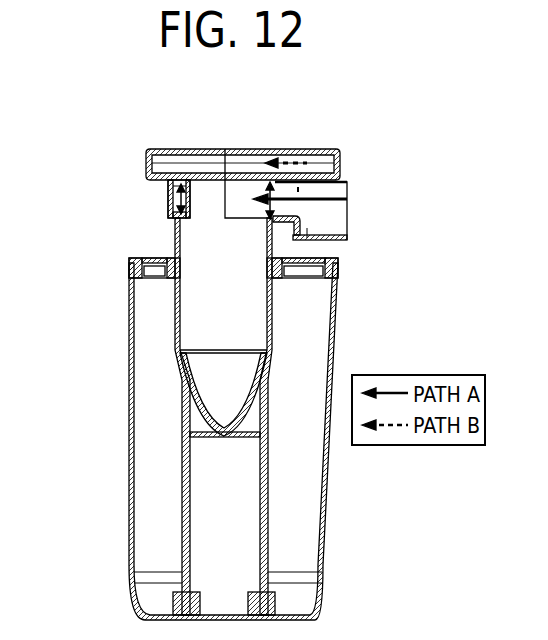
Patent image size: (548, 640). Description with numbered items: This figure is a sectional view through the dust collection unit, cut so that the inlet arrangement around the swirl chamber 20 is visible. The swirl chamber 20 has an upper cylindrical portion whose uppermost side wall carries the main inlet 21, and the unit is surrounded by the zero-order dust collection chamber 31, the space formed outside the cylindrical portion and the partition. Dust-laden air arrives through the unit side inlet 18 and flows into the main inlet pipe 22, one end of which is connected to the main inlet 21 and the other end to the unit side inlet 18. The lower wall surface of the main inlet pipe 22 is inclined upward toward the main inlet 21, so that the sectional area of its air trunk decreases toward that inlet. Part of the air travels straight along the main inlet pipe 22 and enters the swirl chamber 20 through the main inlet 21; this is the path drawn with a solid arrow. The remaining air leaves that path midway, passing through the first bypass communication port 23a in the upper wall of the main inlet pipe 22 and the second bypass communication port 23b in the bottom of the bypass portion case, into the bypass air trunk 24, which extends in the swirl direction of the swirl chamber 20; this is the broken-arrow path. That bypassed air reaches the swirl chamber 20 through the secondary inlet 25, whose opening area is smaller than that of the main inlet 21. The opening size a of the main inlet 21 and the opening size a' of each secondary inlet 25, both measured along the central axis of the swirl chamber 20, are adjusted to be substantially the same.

The unit side inlet 18 is at (347, 225).
The swirl chamber 20 is at (202, 327).
The main inlet 21 is at (278, 205).
The main inlet pipe 22 is at (337, 230).
The first bypass communication port 23a is at (273, 203).
The second bypass communication port 23b is at (300, 171).
The bypass air trunk 24 is at (253, 167).
The secondary inlet 25 is at (168, 205).
The zero-order dust collection chamber 31 is at (157, 432).
The opening size of the main inlet a is at (337, 276).
The opening size of the secondary inlet a' is at (128, 186).